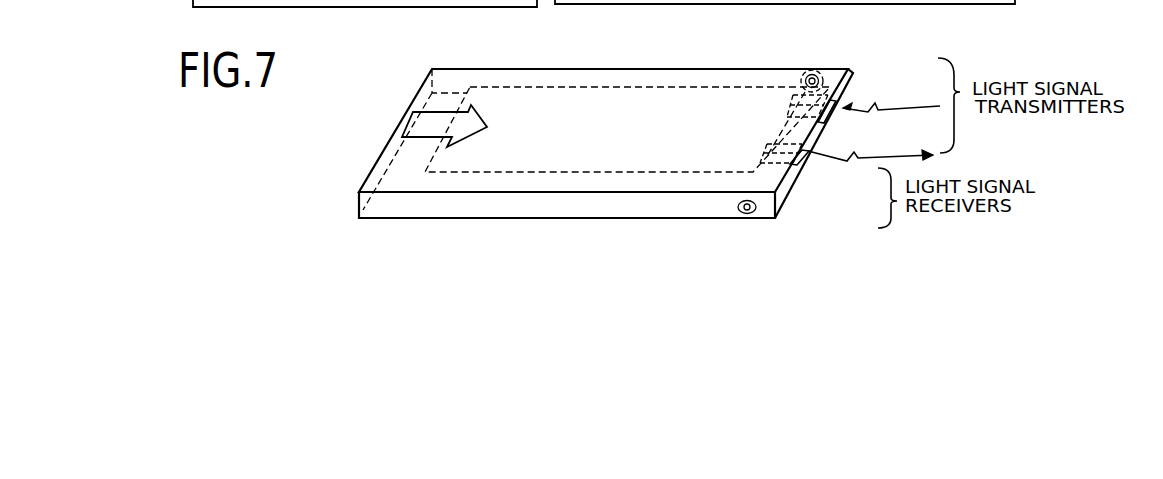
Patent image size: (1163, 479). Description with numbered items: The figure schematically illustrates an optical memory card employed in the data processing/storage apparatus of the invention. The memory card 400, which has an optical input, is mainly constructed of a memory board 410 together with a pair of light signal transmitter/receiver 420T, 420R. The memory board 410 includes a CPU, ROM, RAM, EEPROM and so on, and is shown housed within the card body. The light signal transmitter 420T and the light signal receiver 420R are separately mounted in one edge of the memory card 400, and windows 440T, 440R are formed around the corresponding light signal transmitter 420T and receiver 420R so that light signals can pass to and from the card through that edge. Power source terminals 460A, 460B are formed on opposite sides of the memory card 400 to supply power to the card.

The memory card 400 is at (565, 69).
The memory board 410 is at (575, 173).
The light signal transmitter 420T is at (852, 84).
The window 440T is at (835, 118).
The light signal receiver 420R is at (789, 171).
The window 440R is at (806, 164).
The power source terminal 460A is at (749, 214).
The power source terminal 460B is at (853, 53).